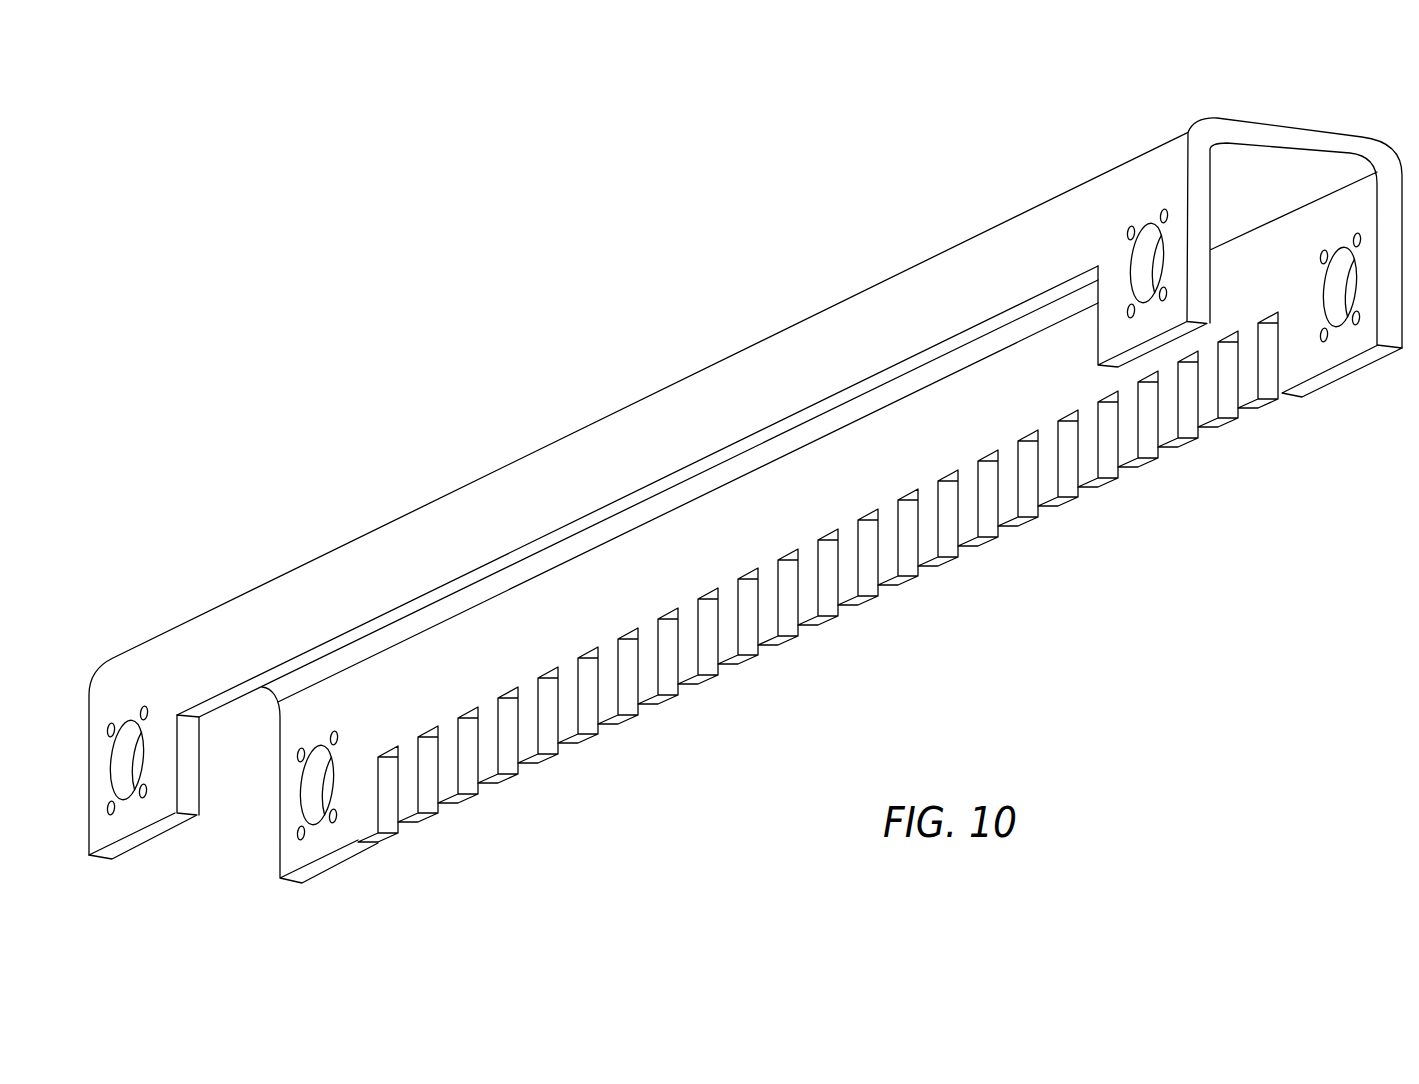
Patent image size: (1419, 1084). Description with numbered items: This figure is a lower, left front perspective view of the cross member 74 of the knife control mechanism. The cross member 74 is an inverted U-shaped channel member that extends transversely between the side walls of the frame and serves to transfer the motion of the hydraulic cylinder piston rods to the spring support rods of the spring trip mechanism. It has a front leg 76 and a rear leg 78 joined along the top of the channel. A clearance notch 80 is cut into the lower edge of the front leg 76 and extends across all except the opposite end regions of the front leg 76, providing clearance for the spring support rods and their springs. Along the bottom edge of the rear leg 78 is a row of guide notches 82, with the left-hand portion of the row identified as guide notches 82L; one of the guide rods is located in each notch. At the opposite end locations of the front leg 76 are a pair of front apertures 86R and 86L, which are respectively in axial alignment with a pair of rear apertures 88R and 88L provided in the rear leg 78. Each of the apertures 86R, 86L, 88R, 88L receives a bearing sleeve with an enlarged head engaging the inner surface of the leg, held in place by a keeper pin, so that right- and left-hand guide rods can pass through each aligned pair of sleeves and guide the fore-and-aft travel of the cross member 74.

The cross member 74 is at (609, 398).
The front leg 76 is at (368, 593).
The rear leg 78 is at (666, 575).
The clearance notch 80 is at (750, 442).
The guide notches 82 is at (457, 790).
The left teeth 82L is at (1108, 477).
The right-hand front aperture 86R is at (128, 728).
The left-hand front aperture 86L is at (1143, 272).
The right-hand rear aperture 88R is at (310, 780).
The left-hand rear aperture 88L is at (1342, 288).